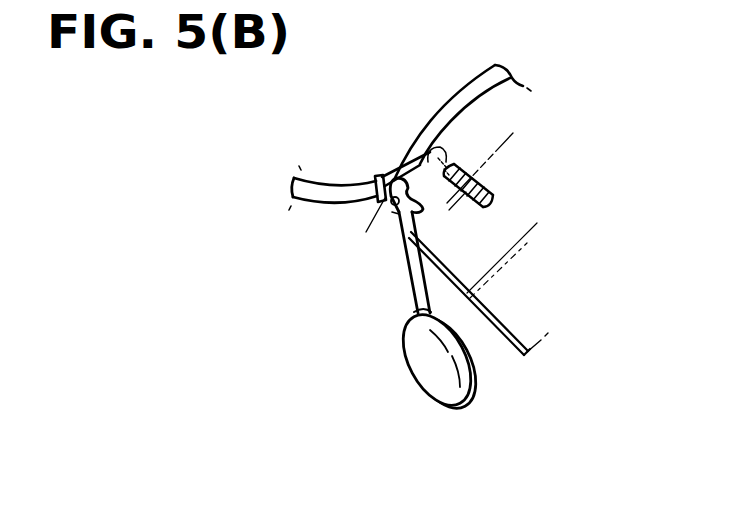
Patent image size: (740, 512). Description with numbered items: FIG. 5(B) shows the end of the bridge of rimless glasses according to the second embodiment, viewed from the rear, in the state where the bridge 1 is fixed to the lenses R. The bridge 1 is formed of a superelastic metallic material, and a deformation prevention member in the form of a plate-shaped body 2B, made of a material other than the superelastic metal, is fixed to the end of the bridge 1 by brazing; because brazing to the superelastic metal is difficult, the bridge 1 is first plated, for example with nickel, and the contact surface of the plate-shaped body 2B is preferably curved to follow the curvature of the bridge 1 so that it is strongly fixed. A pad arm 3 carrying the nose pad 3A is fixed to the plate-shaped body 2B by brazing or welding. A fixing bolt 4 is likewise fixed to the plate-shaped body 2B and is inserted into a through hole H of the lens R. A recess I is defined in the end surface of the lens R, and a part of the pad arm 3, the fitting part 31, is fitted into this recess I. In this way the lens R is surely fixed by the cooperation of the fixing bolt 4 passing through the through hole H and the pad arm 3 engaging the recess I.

The bridge 1 is at (310, 198).
The plate-shaped body 2B is at (389, 175).
The fitting part 31 is at (391, 208).
The recess I is at (392, 213).
The pad arm 3 is at (409, 268).
The nose pad 3A is at (417, 357).
The fixing bolt 4 is at (485, 188).
The through hole H is at (460, 160).
The lens R is at (510, 333).